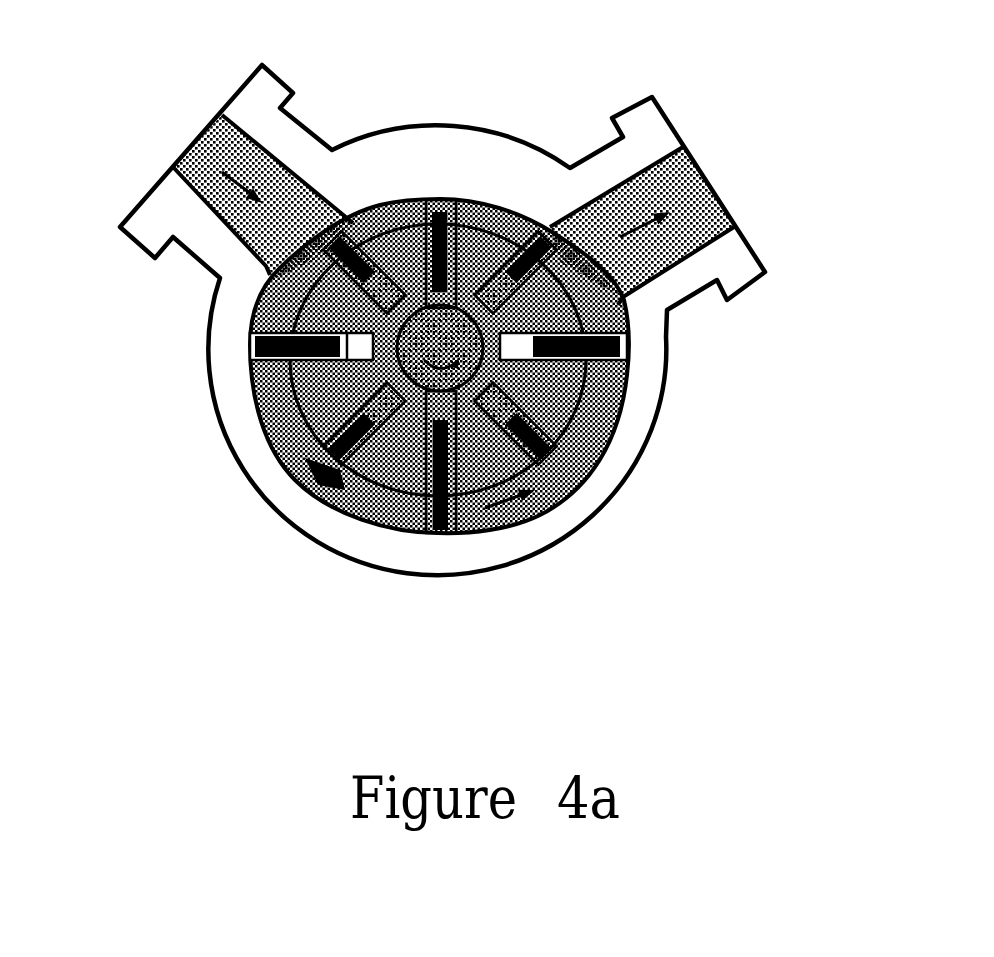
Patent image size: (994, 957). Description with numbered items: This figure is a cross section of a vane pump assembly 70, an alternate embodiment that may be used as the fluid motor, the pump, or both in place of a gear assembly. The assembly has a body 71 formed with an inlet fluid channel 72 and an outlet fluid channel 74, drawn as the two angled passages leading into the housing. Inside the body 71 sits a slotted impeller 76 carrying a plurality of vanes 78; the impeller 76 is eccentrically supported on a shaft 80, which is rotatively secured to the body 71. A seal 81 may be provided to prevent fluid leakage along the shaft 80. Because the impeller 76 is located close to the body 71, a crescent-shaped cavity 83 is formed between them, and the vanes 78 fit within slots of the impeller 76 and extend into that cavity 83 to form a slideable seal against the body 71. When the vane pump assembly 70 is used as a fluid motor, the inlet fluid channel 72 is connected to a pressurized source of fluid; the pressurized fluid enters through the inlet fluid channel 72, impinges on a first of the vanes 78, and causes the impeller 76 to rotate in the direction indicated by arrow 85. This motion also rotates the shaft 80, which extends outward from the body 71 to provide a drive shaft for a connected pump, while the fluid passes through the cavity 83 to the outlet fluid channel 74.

The vane pump assembly 70 is at (450, 313).
The body 71 is at (502, 155).
The inlet fluid channel 72 is at (175, 168).
The outlet fluid channel 74 is at (718, 192).
The slotted impeller 76 is at (615, 397).
The vanes 78 is at (573, 480).
The shaft 80 is at (505, 398).
The seal 81 is at (425, 308).
The crescent-shaped cavity 83 is at (367, 497).
The arrow 85 is at (437, 340).